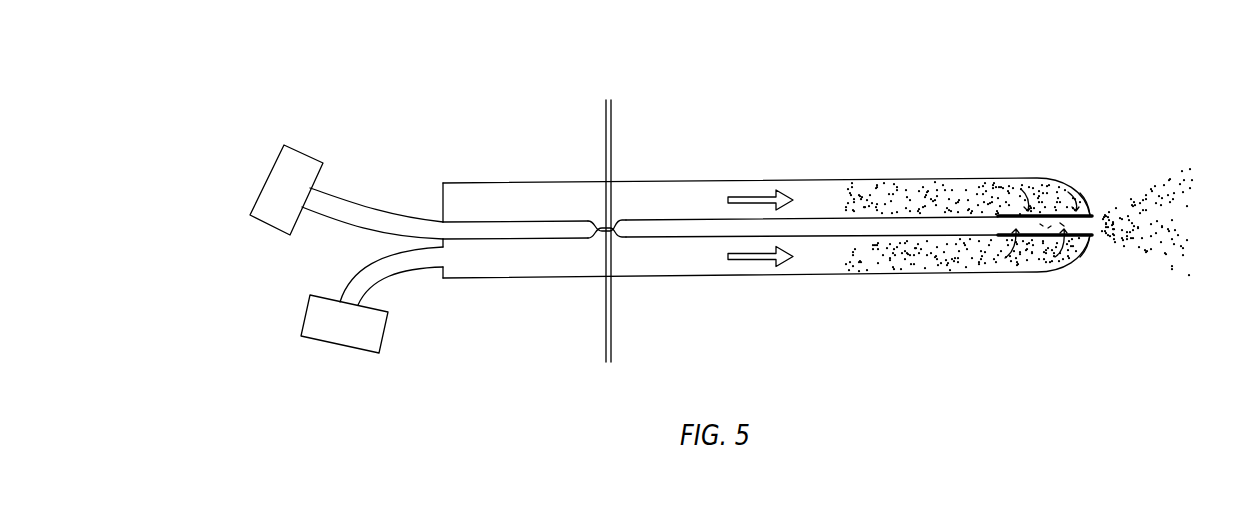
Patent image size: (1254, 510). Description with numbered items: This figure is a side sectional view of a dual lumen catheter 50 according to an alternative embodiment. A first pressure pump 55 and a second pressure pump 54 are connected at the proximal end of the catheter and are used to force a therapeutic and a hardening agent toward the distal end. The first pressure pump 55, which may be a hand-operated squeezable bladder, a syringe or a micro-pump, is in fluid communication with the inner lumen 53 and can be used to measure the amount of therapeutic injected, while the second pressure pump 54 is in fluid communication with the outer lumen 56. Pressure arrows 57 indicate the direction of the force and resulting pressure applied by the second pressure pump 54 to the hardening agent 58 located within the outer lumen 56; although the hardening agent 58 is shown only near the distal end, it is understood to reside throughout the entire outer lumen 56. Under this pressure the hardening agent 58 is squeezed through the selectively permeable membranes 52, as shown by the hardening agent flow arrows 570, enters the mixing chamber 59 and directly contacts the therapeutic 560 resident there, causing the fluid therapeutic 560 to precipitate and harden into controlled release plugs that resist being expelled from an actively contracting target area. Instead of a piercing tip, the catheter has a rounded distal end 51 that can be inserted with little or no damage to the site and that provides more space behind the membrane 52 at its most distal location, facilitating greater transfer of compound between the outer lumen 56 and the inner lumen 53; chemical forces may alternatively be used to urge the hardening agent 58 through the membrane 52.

The dual lumen catheter 50 is at (802, 122).
The rounded distal end 51 is at (1090, 196).
The selectively permeable membrane 52 is at (1078, 240).
The inner lumen 53 is at (543, 230).
The second pressure pump 54 is at (350, 333).
The first pressure pump 55 is at (300, 163).
The outer lumen 56 is at (845, 250).
The pressure arrows 57 is at (750, 200).
The hardening agent 58 is at (973, 185).
The mixing chamber 59 is at (1067, 237).
The therapeutic 560 is at (1088, 226).
The hardening agent flow arrows 570 is at (1082, 210).